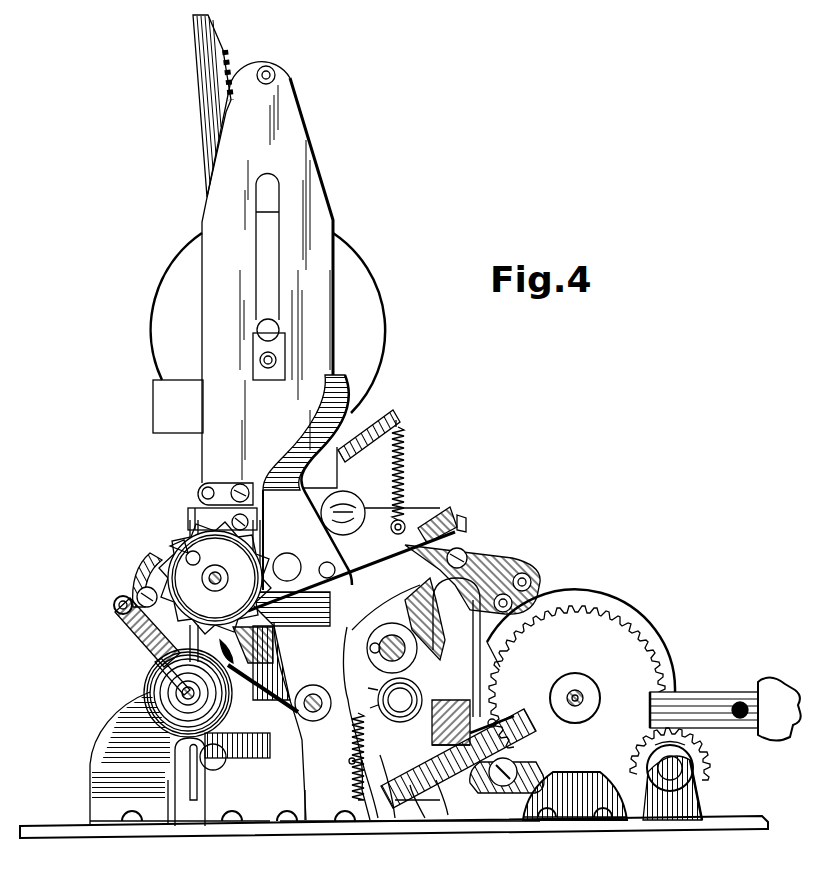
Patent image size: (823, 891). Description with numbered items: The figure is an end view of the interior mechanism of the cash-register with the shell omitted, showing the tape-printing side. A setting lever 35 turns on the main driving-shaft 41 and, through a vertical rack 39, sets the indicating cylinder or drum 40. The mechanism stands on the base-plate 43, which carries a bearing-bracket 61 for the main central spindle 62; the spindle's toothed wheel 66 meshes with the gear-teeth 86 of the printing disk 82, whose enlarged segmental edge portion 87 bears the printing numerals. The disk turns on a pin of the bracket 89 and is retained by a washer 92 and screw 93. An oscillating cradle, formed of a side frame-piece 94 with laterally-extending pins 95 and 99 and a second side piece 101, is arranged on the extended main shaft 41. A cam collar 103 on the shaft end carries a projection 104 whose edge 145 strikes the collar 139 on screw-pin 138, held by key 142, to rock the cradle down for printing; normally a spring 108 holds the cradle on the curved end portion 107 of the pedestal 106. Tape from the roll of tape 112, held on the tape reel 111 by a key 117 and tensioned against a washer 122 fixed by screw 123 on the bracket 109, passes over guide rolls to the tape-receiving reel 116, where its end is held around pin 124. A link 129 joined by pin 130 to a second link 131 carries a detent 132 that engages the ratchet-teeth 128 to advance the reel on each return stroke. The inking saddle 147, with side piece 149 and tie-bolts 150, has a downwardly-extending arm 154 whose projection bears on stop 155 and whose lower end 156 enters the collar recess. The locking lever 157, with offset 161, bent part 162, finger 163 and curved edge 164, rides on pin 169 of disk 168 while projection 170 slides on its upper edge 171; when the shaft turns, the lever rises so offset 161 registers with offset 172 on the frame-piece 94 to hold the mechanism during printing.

The actuating or setting lever 35 is at (724, 700).
The vertical rack 39 is at (207, 100).
The indicating cylinder or drum 40 is at (176, 280).
The main driving-shaft 41 is at (400, 700).
The base-plate 43 is at (190, 829).
The bearing-bracket 61 is at (690, 804).
The main central spindle 62 is at (700, 769).
The gear or toothed wheel 66 is at (690, 743).
The printing disk or wheel 82 is at (593, 695).
The gear-teeth 86 is at (498, 698).
The enlarged segmental edge portion 87 is at (655, 657).
The bracket 89 is at (593, 826).
The washer 92 is at (578, 688).
The screw 93 is at (588, 703).
The side frame-piece 94 is at (287, 646).
The laterally-extending pin 95 is at (205, 580).
The laterally-extending pin 99 is at (313, 692).
The second side piece or frame 101 is at (392, 603).
The cam collar 103 is at (368, 679).
The projection 104 is at (458, 710).
The pedestal or support 106 is at (308, 820).
The curved end portion 107 is at (322, 721).
The spring 108 is at (349, 763).
The bracket 109 is at (98, 764).
The tape reel or roll 111 is at (165, 716).
The roll of tape 112 is at (341, 626).
The tape-receiving reel 116 is at (215, 578).
The key 117 is at (160, 677).
The washer or disk 122 is at (150, 700).
The screw 123 is at (180, 693).
The pin 124 is at (199, 559).
The ratchet-teeth 128 is at (177, 548).
The link 129 is at (122, 598).
The pin 130 is at (114, 607).
The second link 131 is at (132, 635).
The detent or dog 132 is at (140, 572).
The screw-pin 138 is at (375, 637).
The collar 139 is at (392, 632).
The key 142 is at (369, 650).
The edge 145 is at (366, 699).
The frame or saddle 147 is at (472, 568).
The side piece 149 is at (513, 560).
The tie-bolt 150 is at (538, 581).
The downwardly-extending arm 154 is at (457, 647).
The stop 155 is at (450, 513).
The lower end 156 is at (442, 623).
The locking or holding lever 157 is at (497, 745).
The offset 161 is at (423, 805).
The bent part 162 is at (426, 820).
The finger 163 is at (449, 817).
The upper curved edge 164 is at (503, 787).
The disk 168 is at (383, 817).
The pin or projection 169 is at (398, 817).
The projection 170 is at (378, 756).
The upper edge 171 is at (494, 721).
The offset 172 is at (457, 720).